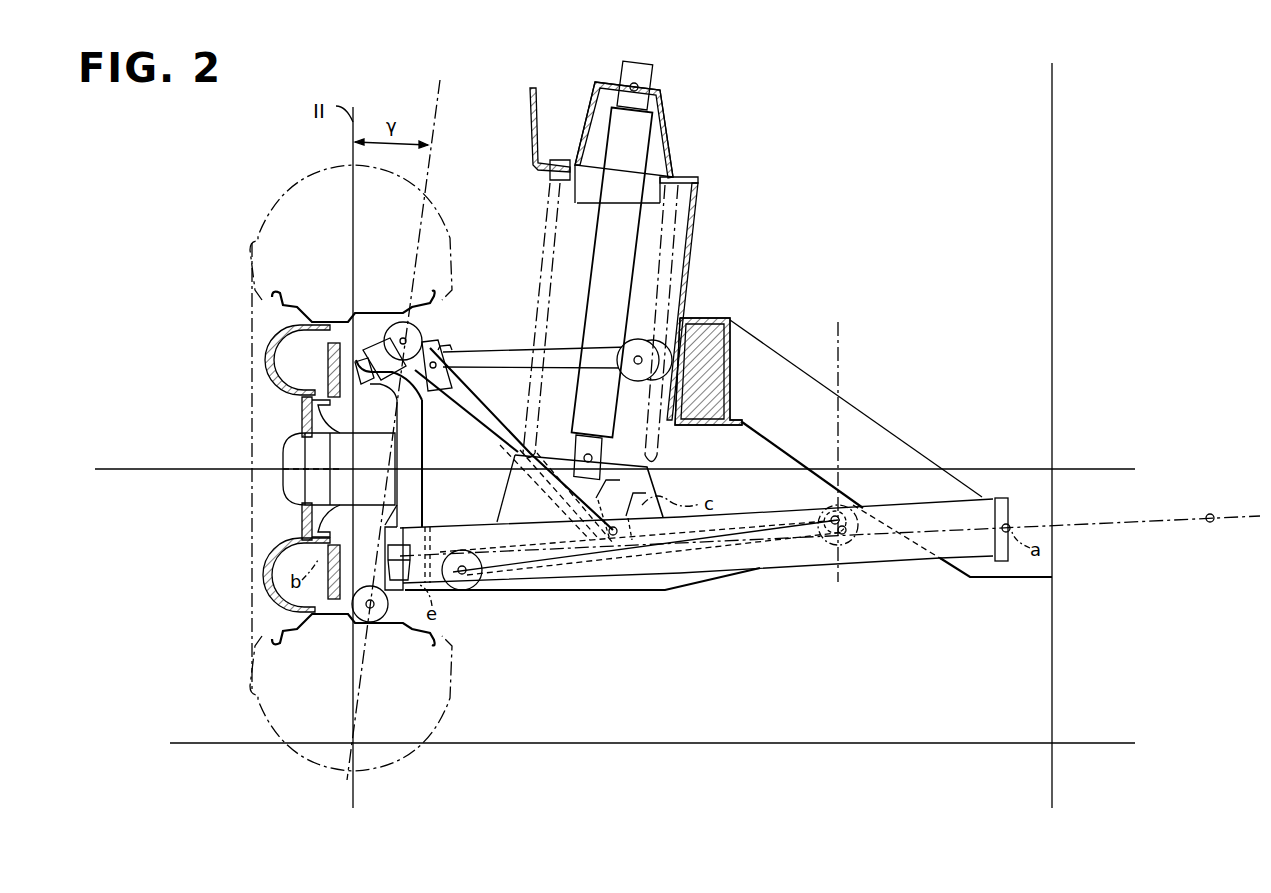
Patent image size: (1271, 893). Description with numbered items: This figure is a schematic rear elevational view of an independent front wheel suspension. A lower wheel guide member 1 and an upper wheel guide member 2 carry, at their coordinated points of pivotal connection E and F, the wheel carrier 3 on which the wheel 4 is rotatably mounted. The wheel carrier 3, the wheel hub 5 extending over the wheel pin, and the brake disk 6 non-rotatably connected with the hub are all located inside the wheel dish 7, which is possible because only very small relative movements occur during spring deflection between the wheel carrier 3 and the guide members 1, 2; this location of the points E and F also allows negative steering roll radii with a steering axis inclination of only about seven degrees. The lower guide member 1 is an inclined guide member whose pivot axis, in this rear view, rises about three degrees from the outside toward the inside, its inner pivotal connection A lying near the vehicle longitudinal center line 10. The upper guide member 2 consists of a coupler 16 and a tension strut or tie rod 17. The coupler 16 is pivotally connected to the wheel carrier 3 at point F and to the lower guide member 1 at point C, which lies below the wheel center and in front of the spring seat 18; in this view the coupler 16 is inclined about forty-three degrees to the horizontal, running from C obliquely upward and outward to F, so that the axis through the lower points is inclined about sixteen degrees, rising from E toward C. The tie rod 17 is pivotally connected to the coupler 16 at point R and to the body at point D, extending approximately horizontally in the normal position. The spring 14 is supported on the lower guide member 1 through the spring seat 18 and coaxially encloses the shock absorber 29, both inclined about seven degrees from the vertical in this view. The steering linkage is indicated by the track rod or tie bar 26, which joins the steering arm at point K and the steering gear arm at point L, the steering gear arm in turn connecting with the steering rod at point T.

The lower wheel guide member 1 is at (537, 583).
The upper wheel guide member 2 is at (452, 351).
The wheel carrier 3 is at (414, 460).
The wheel 4 is at (284, 753).
The wheel hub 5 is at (366, 444).
The brake disk 6 is at (330, 366).
The wheel dish 7 is at (312, 338).
The vehicle longitudinal center line 10 is at (1052, 268).
The spring 14 is at (690, 258).
The coupler 16 is at (488, 440).
The tension strut or tie rod 17 is at (510, 350).
The spring seat 18 is at (655, 498).
The track rod or tie bar 26 is at (572, 568).
The shock absorber 29 is at (640, 128).
The upper point of pivotal connection F is at (412, 336).
The lower point of pivotal connection E is at (388, 604).
The point of pivotal connection of tie rod on coupler R is at (428, 392).
The body-side point of pivotal connection of tie rod D is at (640, 356).
The point of pivotal connection of steering arm and track rod K is at (460, 575).
The point of pivotal connection of coupler on lower guide member C is at (614, 536).
The point of pivotal connection of track rod and steering gear arm L is at (840, 516).
The point of connection of steering rod T is at (846, 534).
The inner point of pivotal connection of lower guide member A is at (1010, 528).